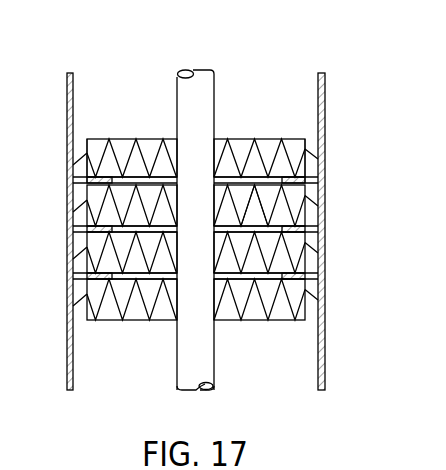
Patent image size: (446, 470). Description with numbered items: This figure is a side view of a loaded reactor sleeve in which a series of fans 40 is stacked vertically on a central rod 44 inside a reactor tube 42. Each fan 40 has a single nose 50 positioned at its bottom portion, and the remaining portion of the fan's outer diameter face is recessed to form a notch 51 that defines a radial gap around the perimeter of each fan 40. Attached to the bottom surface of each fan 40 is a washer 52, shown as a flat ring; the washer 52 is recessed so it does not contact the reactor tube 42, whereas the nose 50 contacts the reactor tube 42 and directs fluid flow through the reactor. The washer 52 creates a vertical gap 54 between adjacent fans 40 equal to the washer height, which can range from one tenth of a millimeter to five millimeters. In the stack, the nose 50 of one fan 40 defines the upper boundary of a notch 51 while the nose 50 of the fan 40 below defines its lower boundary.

The fan 40 is at (110, 310).
The reactor tube 42 is at (326, 86).
The central rod 44 is at (195, 70).
The nose 50 is at (80, 219).
The notch 51 is at (77, 149).
The washer 52 is at (87, 183).
The vertical gap 54 is at (252, 228).